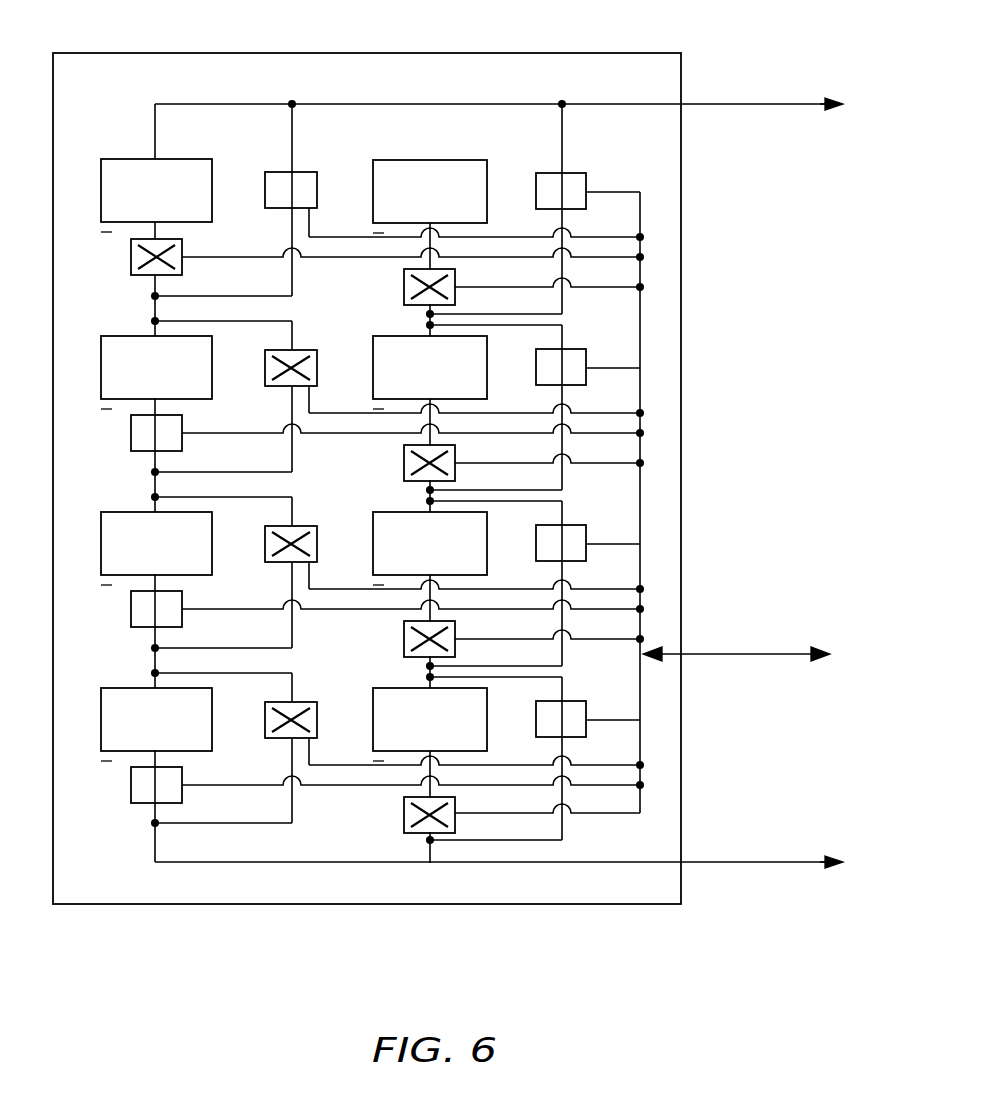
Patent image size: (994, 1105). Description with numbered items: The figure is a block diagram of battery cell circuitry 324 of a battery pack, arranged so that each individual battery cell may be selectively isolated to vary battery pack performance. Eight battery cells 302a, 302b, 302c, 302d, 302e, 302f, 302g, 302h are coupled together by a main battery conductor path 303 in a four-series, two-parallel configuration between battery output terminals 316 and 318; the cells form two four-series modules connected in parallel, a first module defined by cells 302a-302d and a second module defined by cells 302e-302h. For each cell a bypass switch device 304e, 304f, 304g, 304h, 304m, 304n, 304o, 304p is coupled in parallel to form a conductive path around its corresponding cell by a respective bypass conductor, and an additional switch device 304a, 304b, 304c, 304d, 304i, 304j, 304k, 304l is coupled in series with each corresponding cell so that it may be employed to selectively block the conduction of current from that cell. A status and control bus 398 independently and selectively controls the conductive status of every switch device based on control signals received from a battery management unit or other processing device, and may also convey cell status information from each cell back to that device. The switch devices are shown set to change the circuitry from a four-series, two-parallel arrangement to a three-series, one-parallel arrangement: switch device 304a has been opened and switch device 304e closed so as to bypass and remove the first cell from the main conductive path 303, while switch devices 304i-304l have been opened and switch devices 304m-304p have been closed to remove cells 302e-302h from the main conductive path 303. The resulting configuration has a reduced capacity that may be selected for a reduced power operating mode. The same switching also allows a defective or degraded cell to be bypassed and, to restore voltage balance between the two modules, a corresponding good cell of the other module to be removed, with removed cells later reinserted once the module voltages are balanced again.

The battery cell circuitry 324 is at (204, 53).
The main battery conductor path 303 is at (204, 104).
The battery output terminal 316 is at (755, 106).
The battery output terminal 318 is at (740, 862).
The status and control bus 398 is at (727, 656).
The battery cell 302a is at (129, 159).
The battery cell 302b is at (129, 336).
The battery cell 302c is at (129, 512).
The battery cell 302d is at (129, 688).
The battery cell 302e is at (403, 160).
The battery cell 302f is at (403, 336).
The battery cell 302g is at (403, 512).
The battery cell 302h is at (403, 688).
The switch device 304a is at (131, 257).
The switch device 304b is at (131, 433).
The switch device 304c is at (131, 609).
The switch device 304d is at (131, 785).
The switch device 304e is at (270, 208).
The switch device 304f is at (271, 386).
The switch device 304g is at (271, 562).
The switch device 304h is at (271, 738).
The switch device 304i is at (404, 285).
The switch device 304j is at (404, 461).
The switch device 304k is at (404, 637).
The switch device 304l is at (404, 815).
The switch device 304m is at (578, 173).
The switch device 304n is at (578, 349).
The switch device 304o is at (578, 525).
The switch device 304p is at (578, 701).